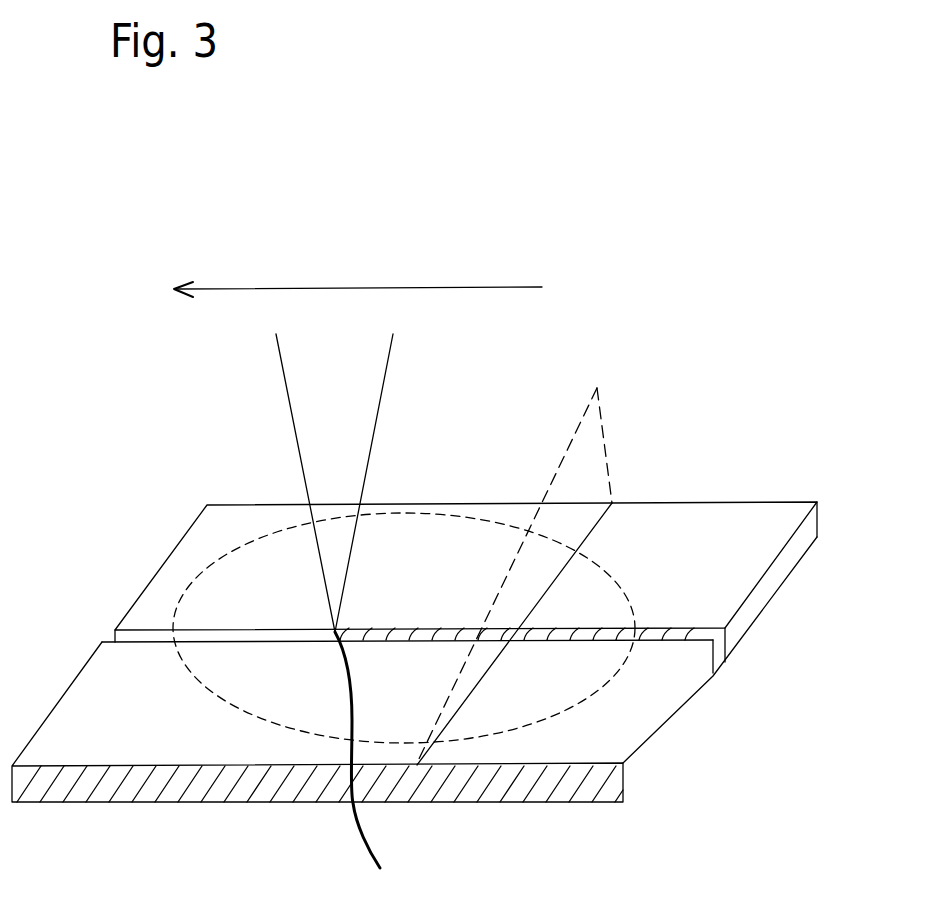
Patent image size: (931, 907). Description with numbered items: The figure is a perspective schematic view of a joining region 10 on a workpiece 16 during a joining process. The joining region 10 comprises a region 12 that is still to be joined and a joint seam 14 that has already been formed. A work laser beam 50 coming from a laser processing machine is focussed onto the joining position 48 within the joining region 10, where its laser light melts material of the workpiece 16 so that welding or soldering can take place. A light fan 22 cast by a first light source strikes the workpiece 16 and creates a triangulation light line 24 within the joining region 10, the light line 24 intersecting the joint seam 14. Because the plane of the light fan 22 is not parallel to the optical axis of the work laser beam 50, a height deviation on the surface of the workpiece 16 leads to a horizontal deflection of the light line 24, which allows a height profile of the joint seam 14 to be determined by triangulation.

The joining region 10 is at (180, 472).
The region to be joined 12 is at (152, 637).
The joint seam 14 is at (670, 630).
The workpiece 16 is at (650, 737).
The light fan 22 is at (583, 422).
The triangulation light line 24 is at (598, 521).
The joining position 48 is at (382, 762).
The work laser beam 50 is at (393, 342).